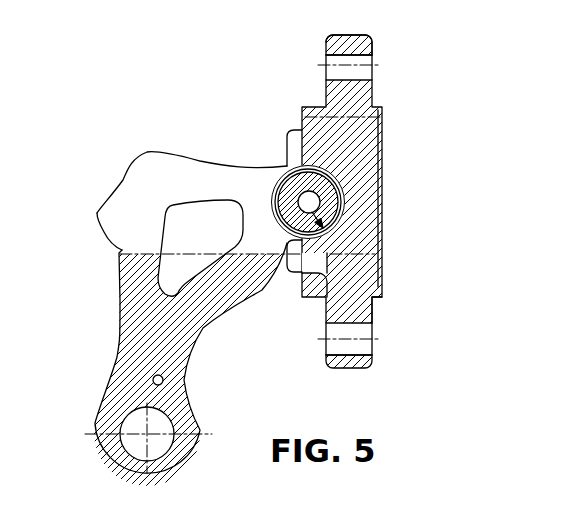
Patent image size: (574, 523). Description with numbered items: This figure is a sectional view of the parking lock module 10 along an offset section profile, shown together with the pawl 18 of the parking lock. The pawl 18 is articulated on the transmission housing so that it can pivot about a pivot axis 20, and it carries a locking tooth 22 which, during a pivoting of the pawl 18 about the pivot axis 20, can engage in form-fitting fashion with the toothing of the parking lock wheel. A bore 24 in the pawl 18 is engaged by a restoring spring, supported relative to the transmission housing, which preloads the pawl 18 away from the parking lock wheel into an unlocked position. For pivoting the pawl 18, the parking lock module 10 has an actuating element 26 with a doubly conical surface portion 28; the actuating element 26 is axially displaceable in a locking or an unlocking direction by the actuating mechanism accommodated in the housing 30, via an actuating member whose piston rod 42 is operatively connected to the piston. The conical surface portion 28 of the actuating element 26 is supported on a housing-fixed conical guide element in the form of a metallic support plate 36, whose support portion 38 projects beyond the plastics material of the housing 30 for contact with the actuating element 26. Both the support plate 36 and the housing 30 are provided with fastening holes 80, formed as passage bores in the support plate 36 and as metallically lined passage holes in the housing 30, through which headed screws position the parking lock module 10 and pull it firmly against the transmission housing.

The parking lock module 10 is at (364, 186).
The pawl 18 is at (136, 336).
The pivot axis 20 is at (148, 434).
The locking tooth 22 is at (97, 217).
The bore 24 is at (162, 377).
The actuating element 26 is at (348, 200).
The conical surface portion 28 is at (375, 158).
The housing 30 is at (382, 287).
The support plate 36 is at (368, 35).
The support portion 38 is at (293, 270).
The piston rod 42 is at (299, 192).
The fastening holes 80 is at (357, 50).